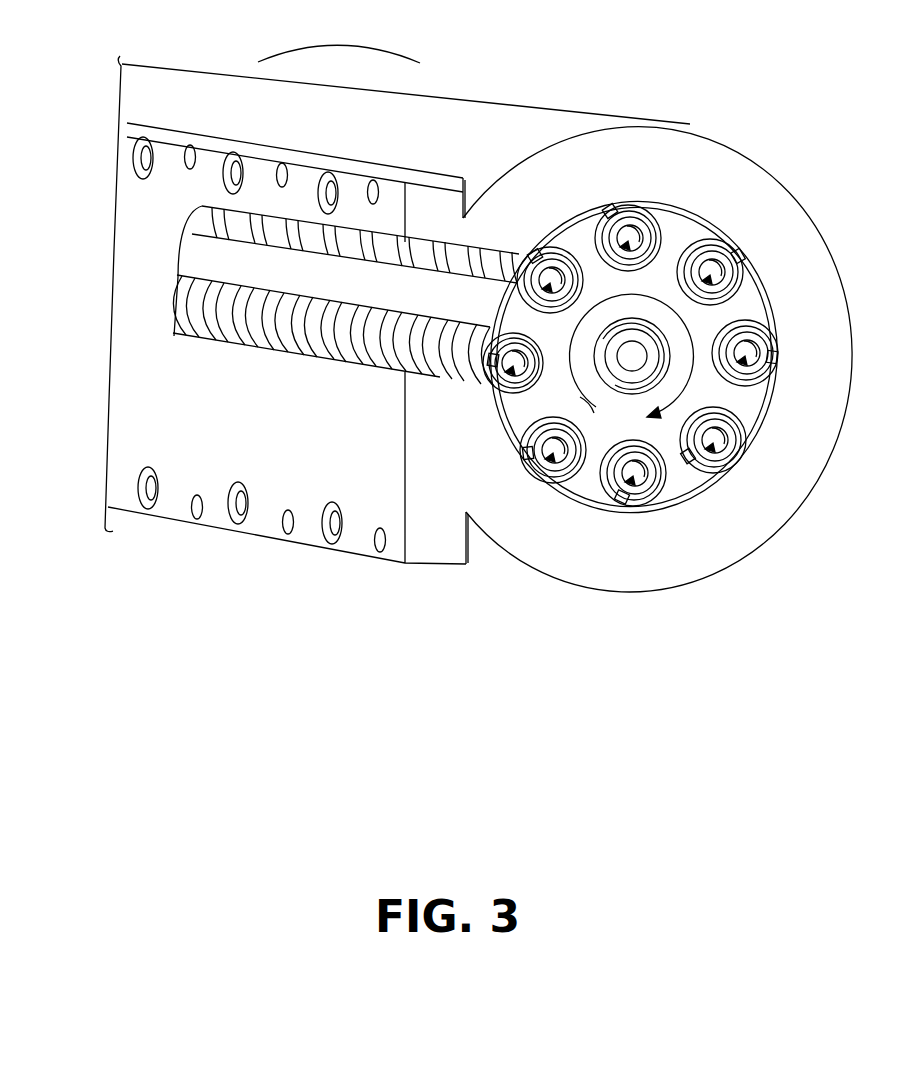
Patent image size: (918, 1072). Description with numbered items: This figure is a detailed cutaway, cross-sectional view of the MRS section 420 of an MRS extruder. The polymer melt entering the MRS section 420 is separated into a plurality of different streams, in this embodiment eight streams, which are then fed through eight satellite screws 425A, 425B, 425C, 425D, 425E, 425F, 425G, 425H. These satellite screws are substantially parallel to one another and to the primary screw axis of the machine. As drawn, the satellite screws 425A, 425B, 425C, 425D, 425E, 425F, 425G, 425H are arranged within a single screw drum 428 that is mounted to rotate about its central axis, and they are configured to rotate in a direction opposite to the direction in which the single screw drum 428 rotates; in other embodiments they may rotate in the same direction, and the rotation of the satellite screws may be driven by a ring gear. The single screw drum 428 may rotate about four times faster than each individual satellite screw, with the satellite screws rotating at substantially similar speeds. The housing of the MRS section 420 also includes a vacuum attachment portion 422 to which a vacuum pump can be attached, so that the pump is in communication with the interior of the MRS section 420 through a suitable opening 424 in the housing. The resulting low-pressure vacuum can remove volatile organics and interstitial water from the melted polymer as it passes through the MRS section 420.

The MRS section 420 is at (273, 83).
The vacuum attachment portion 422 is at (130, 420).
The opening 424 is at (288, 351).
The satellite screw 425A is at (640, 236).
The satellite screw 425B is at (714, 272).
The satellite screw 425C is at (748, 353).
The satellite screw 425D is at (720, 443).
The satellite screw 425E is at (640, 478).
The satellite screw 425F is at (547, 452).
The satellite screw 425G is at (508, 360).
The satellite screw 425H is at (548, 266).
The single screw drum 428 is at (586, 502).